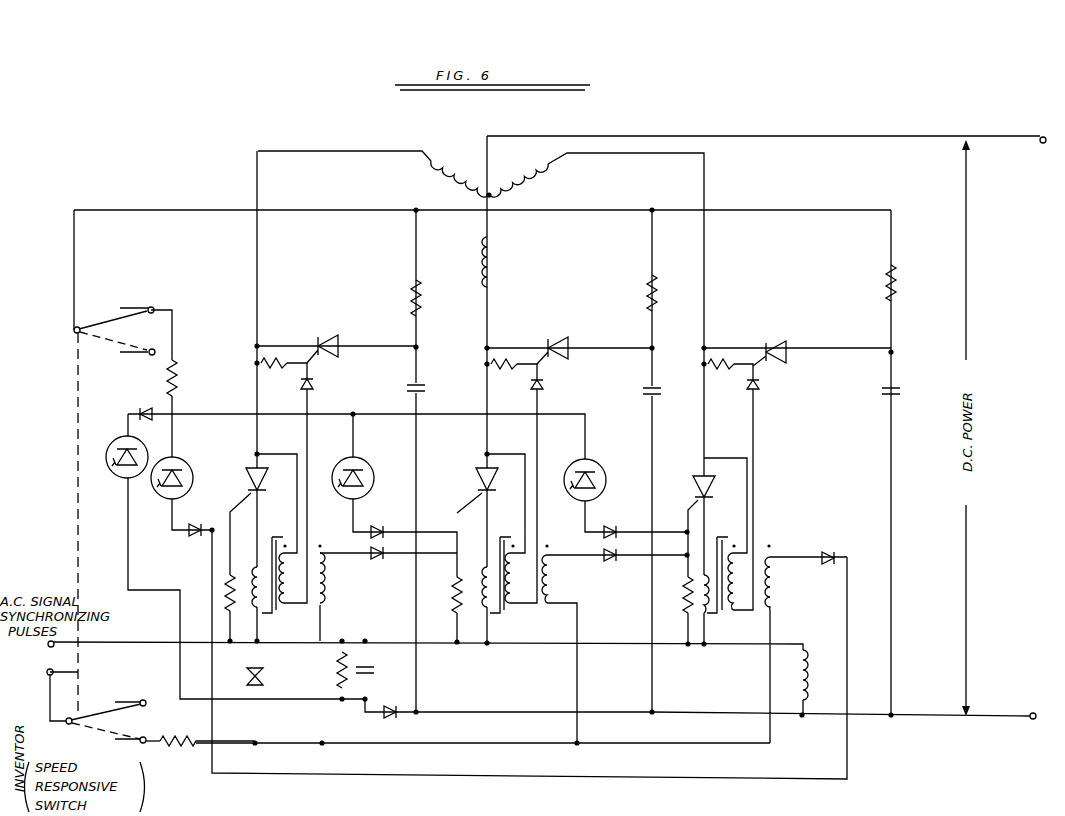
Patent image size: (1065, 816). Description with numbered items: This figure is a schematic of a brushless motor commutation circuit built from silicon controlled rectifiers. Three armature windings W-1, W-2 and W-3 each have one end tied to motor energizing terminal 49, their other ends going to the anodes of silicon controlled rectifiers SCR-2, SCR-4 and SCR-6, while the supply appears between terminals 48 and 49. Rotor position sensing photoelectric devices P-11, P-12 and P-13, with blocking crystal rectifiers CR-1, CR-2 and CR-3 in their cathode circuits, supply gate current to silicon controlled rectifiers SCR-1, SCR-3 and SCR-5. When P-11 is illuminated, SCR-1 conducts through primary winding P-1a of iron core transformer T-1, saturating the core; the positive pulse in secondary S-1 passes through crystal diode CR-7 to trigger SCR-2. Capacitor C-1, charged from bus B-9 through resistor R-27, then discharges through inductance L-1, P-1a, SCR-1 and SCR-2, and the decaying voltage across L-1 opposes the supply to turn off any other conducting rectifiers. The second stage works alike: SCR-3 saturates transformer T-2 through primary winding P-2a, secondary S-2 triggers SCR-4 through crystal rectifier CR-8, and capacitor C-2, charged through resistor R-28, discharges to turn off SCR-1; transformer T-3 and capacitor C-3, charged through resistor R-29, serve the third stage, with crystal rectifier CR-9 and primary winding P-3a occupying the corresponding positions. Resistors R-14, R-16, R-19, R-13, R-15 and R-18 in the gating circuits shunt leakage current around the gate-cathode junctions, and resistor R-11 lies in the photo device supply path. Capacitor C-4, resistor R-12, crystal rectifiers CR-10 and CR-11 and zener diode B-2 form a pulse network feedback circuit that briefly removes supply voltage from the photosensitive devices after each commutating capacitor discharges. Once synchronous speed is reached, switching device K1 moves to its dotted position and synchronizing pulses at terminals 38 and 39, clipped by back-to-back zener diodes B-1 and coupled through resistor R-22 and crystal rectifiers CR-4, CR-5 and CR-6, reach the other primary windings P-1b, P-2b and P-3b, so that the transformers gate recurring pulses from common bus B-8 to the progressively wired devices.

The armature winding W-1 is at (441, 176).
The armature winding W-2 is at (494, 245).
The armature winding W-3 is at (522, 183).
The bus B-9 is at (782, 218).
The common bus B-8 is at (497, 745).
The resistor R-27 is at (410, 288).
The resistor R-28 is at (650, 288).
The resistor R-29 is at (886, 277).
The silicon controlled rectifier SCR-1 is at (245, 470).
The silicon controlled rectifier SCR-2 is at (336, 329).
The silicon controlled rectifier SCR-3 is at (479, 481).
The silicon controlled rectifier SCR-4 is at (570, 331).
The silicon controlled rectifier SCR-5 is at (695, 476).
The silicon controlled rectifier SCR-6 is at (790, 334).
The resistor R-14 is at (284, 368).
The resistor R-16 is at (515, 368).
The resistor R-19 is at (731, 368).
The crystal diode CR-7 is at (314, 384).
The crystal rectifier CR-8 is at (544, 384).
The diode CR-9 is at (759, 390).
The capacitor C-1 is at (426, 389).
The capacitor C-2 is at (645, 393).
The capacitor C-3 is at (881, 391).
The capacitor C-4 is at (371, 672).
The crystal rectifier CR-11 is at (144, 408).
The resistor R-11 is at (177, 378).
The zener diode B-2 is at (113, 476).
The photoelectric device P-11 is at (157, 498).
The photoelectric device P-12 is at (381, 456).
The photosensitive device P-13 is at (617, 456).
The crystal rectifier CR-1 is at (192, 537).
The crystal rectifier CR-2 is at (378, 527).
The crystal rectifier CR-3 is at (611, 526).
The crystal rectifier CR-4 is at (377, 560).
The crystal rectifier CR-5 is at (611, 562).
The crystal rectifier CR-6 is at (827, 552).
The crystal rectifier CR-10 is at (388, 718).
The resistor R-13 is at (226, 584).
The resistor R-15 is at (454, 587).
The resistor R-18 is at (684, 599).
The resistor R-12 is at (338, 663).
The resistor R-22 is at (177, 751).
The clipper B-1 is at (264, 684).
The switching device K1 is at (68, 740).
The terminal 38 is at (74, 655).
The terminal 39 is at (74, 674).
The terminal 48 is at (1041, 704).
The motor energizing terminal 49 is at (1041, 147).
The primary winding P-1a is at (257, 565).
The primary winding P-1b is at (325, 597).
The secondary S-1 is at (299, 557).
The iron core transformer T-1 is at (270, 616).
The primary winding P-2a is at (484, 614).
The primary winding P-2b is at (549, 590).
The secondary S-2 is at (518, 572).
The transformer T-2 is at (505, 618).
The transformer primary winding P-3a is at (700, 616).
The primary winding P-3b is at (774, 595).
The transformer T-3 is at (712, 625).
The inductance L-1 is at (808, 679).